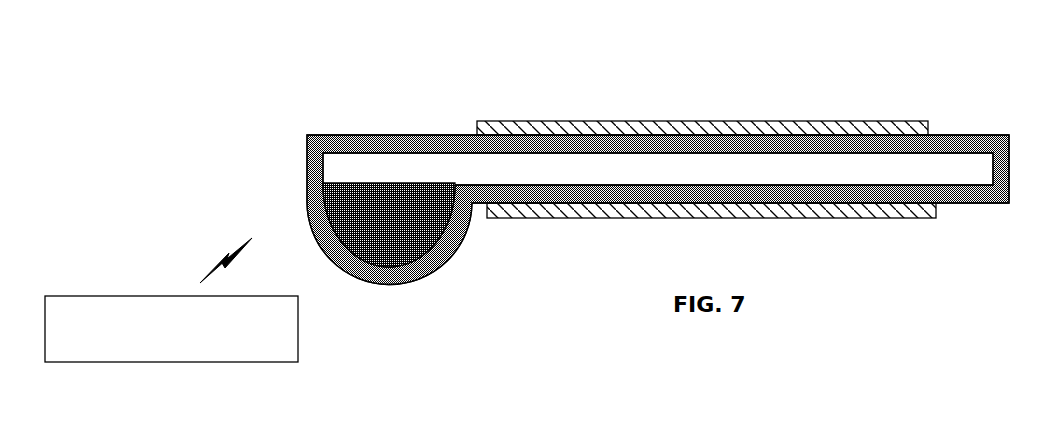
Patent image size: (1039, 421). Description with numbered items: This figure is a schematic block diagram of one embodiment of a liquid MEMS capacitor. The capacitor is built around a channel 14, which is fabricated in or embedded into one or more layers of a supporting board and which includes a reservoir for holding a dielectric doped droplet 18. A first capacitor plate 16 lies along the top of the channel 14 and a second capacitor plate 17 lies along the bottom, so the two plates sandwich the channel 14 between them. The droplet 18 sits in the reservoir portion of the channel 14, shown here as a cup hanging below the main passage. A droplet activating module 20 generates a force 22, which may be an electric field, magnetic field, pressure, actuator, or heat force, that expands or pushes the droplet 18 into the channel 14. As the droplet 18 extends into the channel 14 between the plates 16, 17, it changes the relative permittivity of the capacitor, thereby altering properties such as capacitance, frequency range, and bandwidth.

The channel 14 is at (305, 151).
The first capacitor plate 16 is at (702, 95).
The second capacitor plate 17 is at (714, 242).
The dielectric doped droplet 18 is at (389, 225).
The droplet activating module 20 is at (171, 329).
The force 22 is at (191, 259).